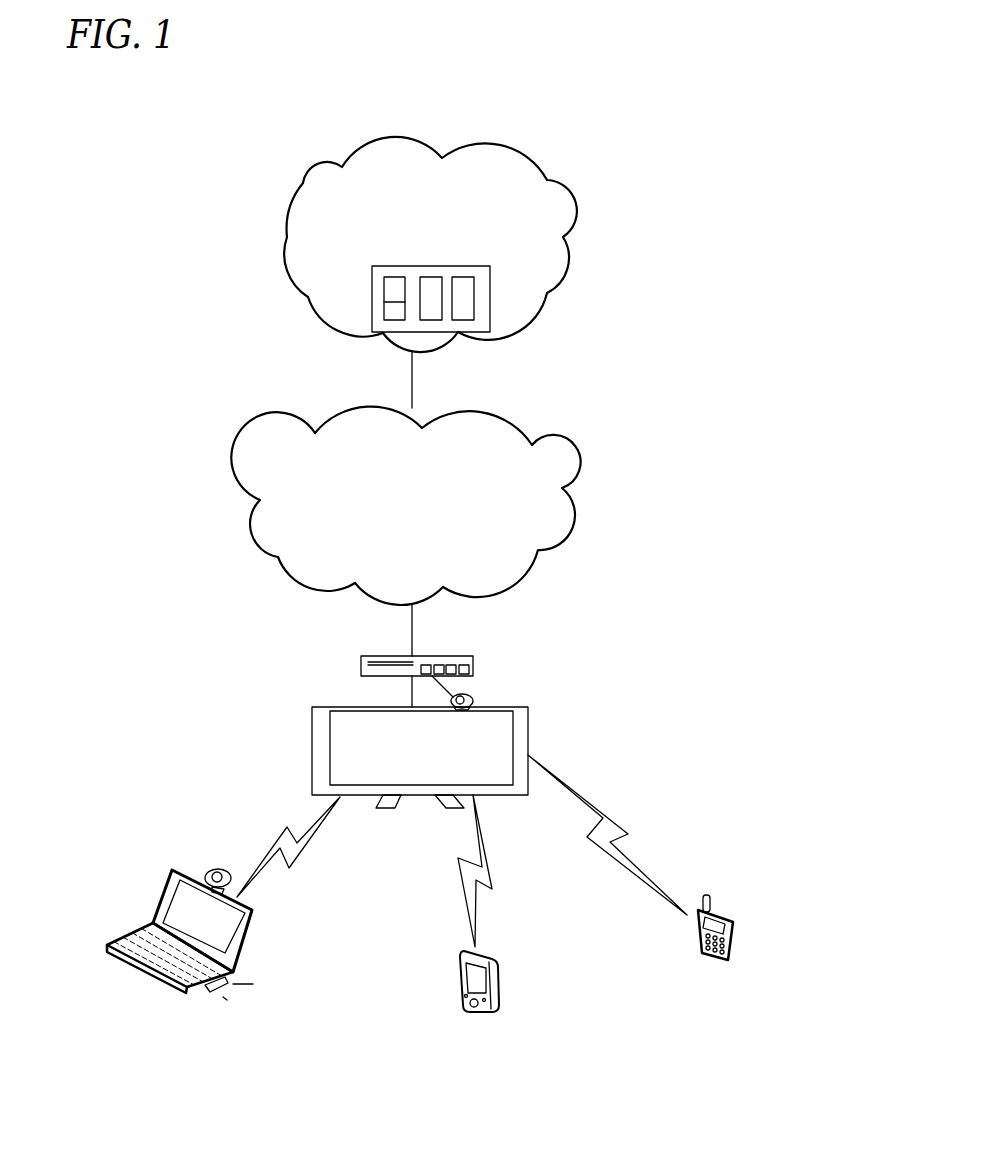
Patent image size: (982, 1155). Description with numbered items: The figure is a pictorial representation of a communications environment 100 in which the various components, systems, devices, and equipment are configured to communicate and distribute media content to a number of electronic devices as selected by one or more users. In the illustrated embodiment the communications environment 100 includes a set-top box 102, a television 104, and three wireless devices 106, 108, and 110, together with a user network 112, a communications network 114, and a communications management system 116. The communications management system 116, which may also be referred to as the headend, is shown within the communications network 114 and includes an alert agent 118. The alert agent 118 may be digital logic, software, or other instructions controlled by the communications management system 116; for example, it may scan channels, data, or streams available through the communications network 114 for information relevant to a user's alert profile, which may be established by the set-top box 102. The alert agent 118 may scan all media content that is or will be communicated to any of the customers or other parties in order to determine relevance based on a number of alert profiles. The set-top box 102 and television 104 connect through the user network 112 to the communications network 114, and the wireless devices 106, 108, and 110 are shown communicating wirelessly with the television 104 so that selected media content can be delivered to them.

The communications environment 100 is at (187, 100).
The set-top box 102 is at (373, 676).
The television 104 is at (436, 766).
The wireless device 106 is at (157, 963).
The wireless device 108 is at (487, 968).
The wireless device 110 is at (728, 932).
The user network 112 is at (425, 528).
The communications network 114 is at (443, 243).
The communications management system 116 is at (447, 307).
The alert agent 118 is at (396, 316).